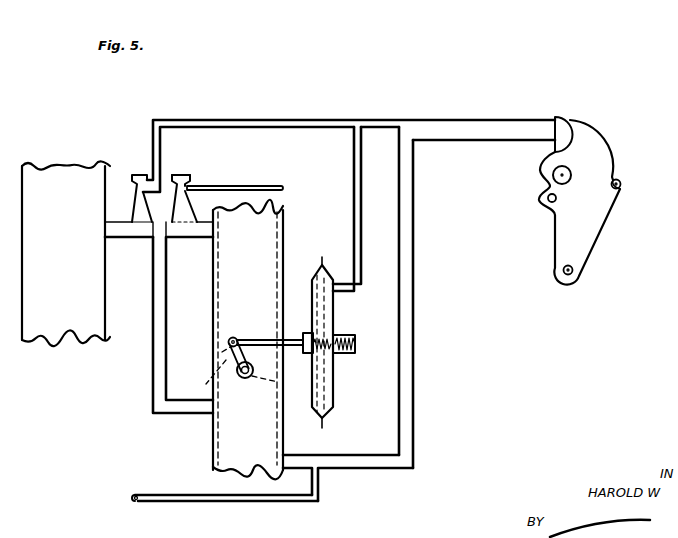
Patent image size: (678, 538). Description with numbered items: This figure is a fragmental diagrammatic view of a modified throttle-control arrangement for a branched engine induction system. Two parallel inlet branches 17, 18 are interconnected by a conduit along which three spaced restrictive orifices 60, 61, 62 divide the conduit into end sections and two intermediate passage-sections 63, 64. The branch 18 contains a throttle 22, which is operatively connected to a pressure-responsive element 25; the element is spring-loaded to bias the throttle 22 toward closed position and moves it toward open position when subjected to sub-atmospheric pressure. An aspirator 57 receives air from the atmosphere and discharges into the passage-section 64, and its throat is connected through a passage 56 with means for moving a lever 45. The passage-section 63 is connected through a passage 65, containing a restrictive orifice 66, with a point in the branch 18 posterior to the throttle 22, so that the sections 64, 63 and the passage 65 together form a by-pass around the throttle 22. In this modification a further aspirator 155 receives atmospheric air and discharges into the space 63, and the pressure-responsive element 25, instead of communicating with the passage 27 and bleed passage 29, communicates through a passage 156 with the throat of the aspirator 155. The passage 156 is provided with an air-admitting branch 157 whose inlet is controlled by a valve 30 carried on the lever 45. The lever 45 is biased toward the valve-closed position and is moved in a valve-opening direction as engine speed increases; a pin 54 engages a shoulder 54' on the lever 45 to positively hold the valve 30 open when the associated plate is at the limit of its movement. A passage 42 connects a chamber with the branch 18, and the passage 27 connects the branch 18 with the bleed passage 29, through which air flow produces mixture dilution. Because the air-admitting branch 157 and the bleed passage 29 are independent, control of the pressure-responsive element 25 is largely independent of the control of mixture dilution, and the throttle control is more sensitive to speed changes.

The branch 17 is at (66, 253).
The branch 18 is at (222, 449).
The throttle 22 is at (224, 364).
The pressure-responsive element 25 is at (334, 405).
The passage 27 is at (388, 470).
The bleed passage 29 is at (416, 256).
The valve 30 is at (565, 133).
The passage 42 is at (238, 496).
The lever 45 is at (598, 162).
The pin 54 is at (637, 181).
The shoulder 54' is at (638, 198).
The passage 56 is at (266, 185).
The aspirator 57 is at (200, 178).
The restrictive orifice 60 is at (128, 239).
The restrictive orifice 61 is at (170, 232).
The restrictive orifice 62 is at (204, 238).
The passage-section 63 is at (135, 220).
The passage-section 64 is at (177, 240).
The passage 65 is at (152, 376).
The restrictive orifice 66 is at (160, 250).
The aspirator 155 is at (141, 172).
The passage 156 is at (288, 118).
The air-admitting branch 157 is at (460, 119).